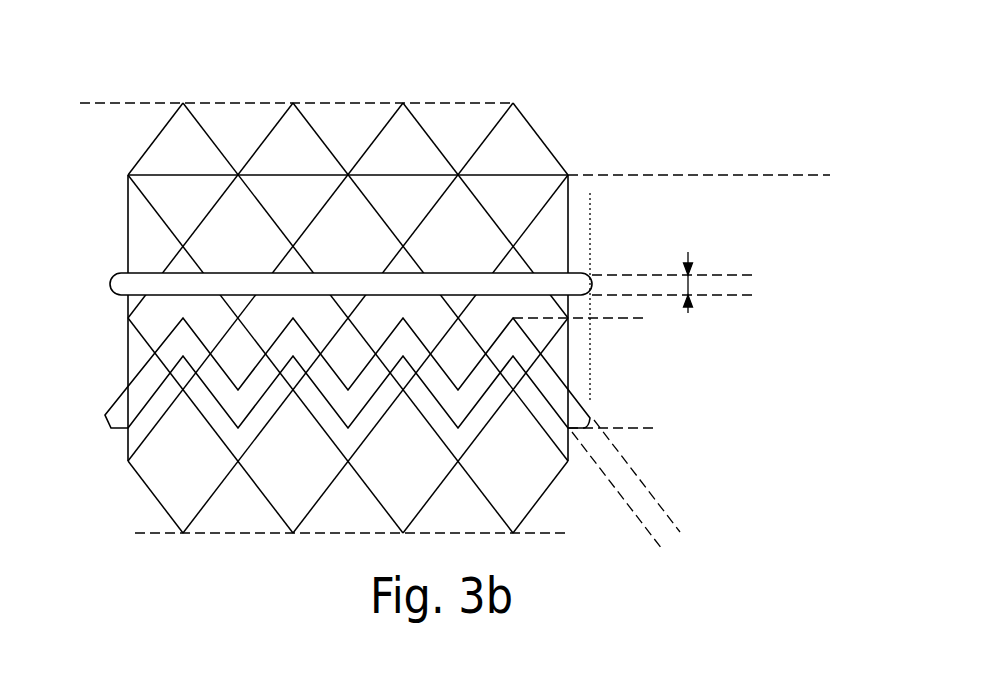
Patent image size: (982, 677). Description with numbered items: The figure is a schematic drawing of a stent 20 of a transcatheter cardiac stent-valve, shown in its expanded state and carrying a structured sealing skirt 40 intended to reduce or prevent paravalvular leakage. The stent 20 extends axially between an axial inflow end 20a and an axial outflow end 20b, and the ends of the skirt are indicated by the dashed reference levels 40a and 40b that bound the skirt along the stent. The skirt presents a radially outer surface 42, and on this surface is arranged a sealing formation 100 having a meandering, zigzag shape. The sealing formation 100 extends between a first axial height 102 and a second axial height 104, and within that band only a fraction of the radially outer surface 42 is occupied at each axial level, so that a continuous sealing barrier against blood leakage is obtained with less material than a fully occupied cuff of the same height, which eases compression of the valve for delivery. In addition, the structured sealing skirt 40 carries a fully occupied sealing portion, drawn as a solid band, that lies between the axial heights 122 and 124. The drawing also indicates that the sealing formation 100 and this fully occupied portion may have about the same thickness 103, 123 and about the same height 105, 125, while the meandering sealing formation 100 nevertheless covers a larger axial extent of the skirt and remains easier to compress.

The stent 20 is at (299, 273).
The axial inflow end 20a is at (299, 531).
The axial outflow end 20b is at (272, 99).
The structured sealing skirt 40 is at (290, 315).
The first end of graft 40a is at (299, 531).
The second end of graft 40b is at (724, 176).
The radially outer surface 42 is at (122, 192).
The sealing formation 100 is at (104, 387).
The first axial height 102 is at (581, 333).
The thickness 103 is at (675, 484).
The second axial height 104 is at (611, 414).
The height 105 is at (657, 294).
The axial height 122 is at (700, 274).
The thickness 123 is at (745, 252).
The axial height 124 is at (700, 301).
The height 125 is at (775, 213).